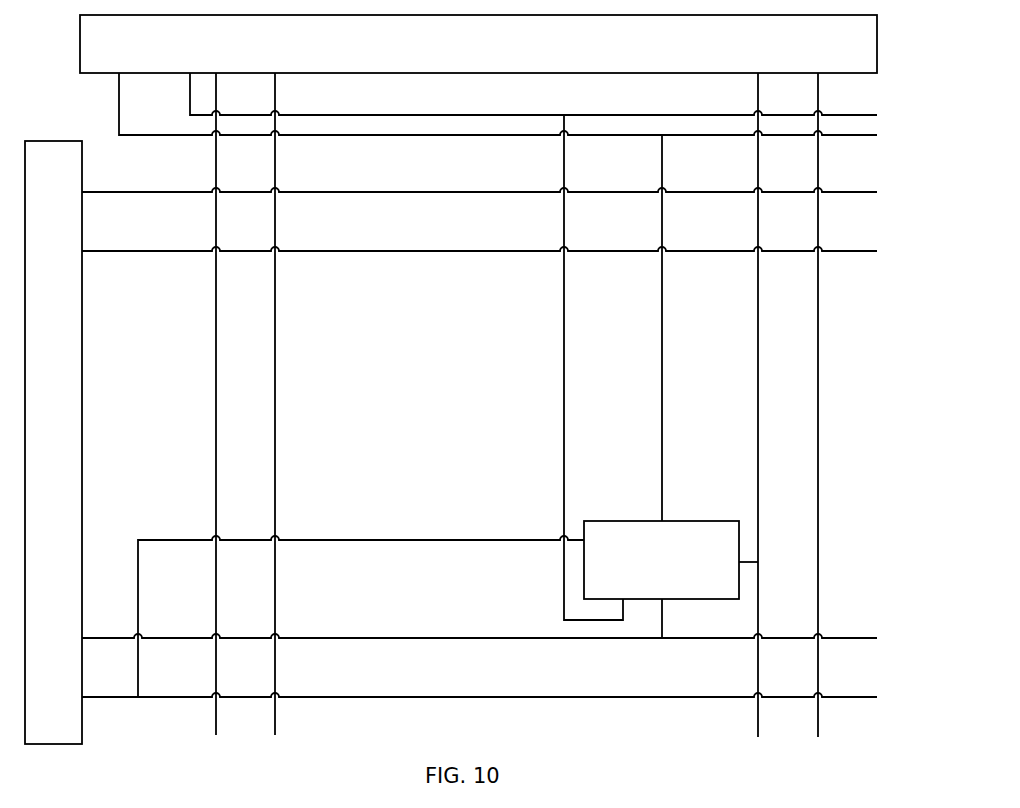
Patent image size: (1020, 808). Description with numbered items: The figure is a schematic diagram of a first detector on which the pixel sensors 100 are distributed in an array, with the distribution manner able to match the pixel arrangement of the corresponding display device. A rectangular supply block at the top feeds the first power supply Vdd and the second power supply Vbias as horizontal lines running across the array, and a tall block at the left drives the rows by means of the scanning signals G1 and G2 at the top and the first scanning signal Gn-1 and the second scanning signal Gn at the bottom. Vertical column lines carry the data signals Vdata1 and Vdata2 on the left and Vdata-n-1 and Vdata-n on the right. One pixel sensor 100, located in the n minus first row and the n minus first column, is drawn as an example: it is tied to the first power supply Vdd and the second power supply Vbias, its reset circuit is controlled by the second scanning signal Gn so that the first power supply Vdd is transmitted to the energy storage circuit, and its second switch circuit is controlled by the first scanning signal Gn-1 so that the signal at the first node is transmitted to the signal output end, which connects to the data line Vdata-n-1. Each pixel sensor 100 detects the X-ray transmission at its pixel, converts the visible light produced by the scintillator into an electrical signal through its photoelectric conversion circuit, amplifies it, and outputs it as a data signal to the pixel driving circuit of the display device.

The pixel sensor 100 is at (739, 521).
The scanning signal G1 is at (479, 179).
The scanning signal G2 is at (479, 237).
The first scanning signal Gn-1 is at (479, 630).
The second scanning signal Gn is at (479, 686).
The data signal Vdata1 is at (244, 404).
The data signal Vdata2 is at (309, 404).
The data signal Vdata-n-1 is at (719, 405).
The data signal Vdata-n is at (852, 405).
The second power supply Vbias is at (487, 89).
The first power supply Vdd is at (524, 79).